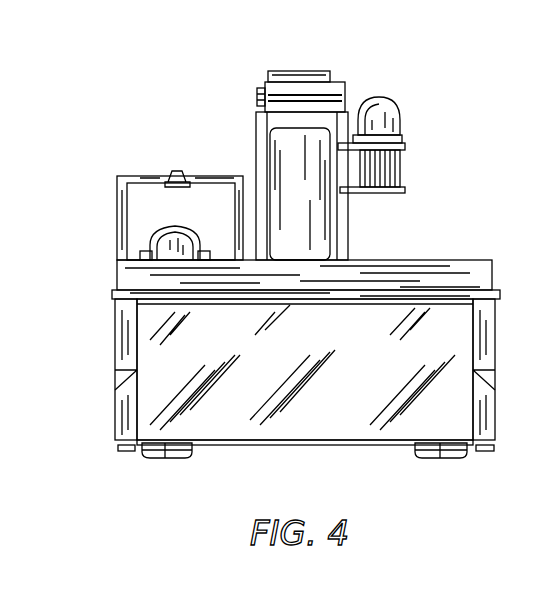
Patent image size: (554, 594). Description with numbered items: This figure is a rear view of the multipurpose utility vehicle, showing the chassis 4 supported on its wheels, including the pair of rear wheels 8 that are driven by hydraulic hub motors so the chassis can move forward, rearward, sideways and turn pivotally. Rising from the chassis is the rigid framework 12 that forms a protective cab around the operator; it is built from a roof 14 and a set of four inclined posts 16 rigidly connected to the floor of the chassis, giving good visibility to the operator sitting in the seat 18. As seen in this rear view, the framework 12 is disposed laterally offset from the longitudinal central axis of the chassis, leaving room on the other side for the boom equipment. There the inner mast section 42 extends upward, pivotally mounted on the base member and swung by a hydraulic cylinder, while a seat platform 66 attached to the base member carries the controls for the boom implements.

The chassis 4 is at (452, 260).
The rear wheels 8 is at (180, 454).
The framework 12 is at (149, 176).
The roof 14 is at (222, 174).
The inclined posts 16 is at (120, 222).
The seat 18 is at (182, 238).
The inner mast section 42 is at (298, 71).
The seat platform 66 is at (382, 115).